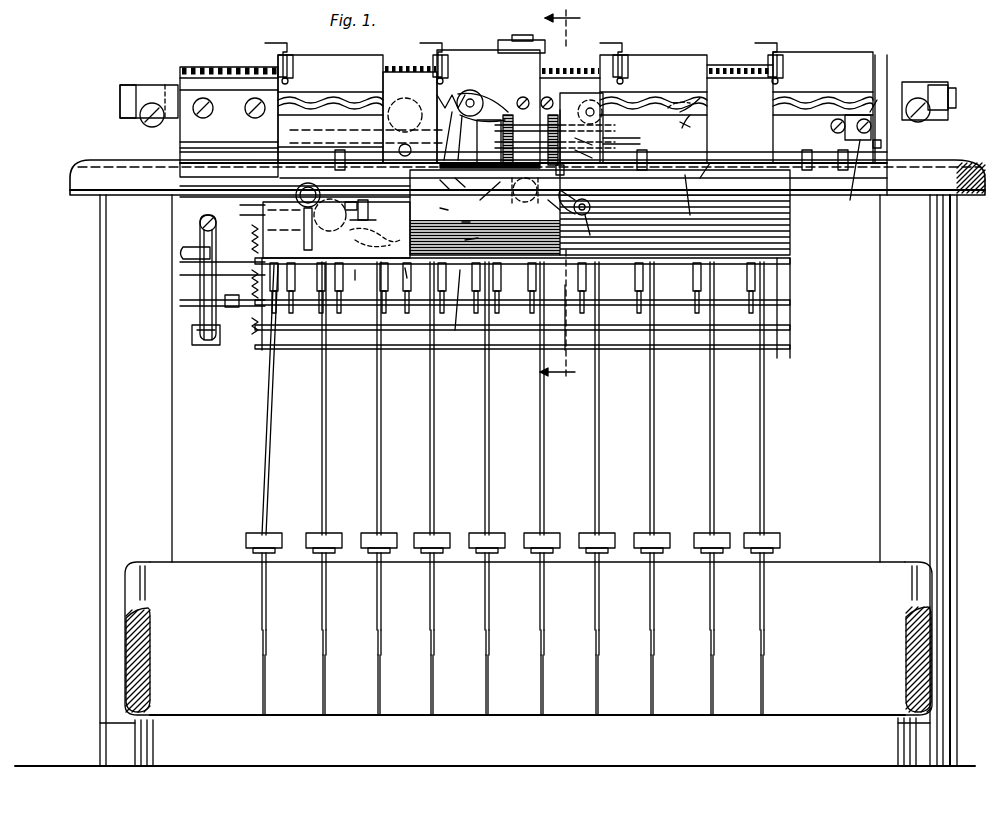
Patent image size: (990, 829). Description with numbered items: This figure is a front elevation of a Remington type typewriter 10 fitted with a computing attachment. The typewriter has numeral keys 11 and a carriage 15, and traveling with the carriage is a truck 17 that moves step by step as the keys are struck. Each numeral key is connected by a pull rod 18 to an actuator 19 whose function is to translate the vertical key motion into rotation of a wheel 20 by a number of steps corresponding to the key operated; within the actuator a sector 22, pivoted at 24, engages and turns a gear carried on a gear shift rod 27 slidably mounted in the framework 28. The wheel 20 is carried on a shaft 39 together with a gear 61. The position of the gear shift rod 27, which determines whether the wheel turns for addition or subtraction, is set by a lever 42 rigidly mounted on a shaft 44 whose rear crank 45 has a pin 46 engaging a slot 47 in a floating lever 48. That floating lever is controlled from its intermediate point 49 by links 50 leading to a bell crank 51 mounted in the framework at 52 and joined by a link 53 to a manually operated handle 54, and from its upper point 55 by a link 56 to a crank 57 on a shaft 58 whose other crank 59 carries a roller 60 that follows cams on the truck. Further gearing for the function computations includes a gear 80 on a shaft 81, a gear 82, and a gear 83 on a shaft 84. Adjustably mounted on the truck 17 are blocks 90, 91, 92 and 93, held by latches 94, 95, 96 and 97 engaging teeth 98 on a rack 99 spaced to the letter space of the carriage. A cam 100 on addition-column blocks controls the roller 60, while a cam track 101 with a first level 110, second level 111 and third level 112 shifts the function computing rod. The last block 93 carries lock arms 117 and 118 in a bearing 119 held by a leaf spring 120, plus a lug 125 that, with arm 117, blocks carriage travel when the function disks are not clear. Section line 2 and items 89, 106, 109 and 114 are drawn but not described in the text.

The section line 2 is at (566, 200).
The Remington type typewriter 10 is at (120, 253).
The numeral keys 11 is at (422, 533).
The carriage 15 is at (150, 88).
The truck 17 is at (730, 100).
The pull rod 18 is at (597, 410).
The actuator 19 is at (571, 315).
The wheel 20 is at (485, 195).
The sector 22 is at (466, 239).
The pivot 24 is at (465, 300).
The gear shift rod 27 is at (372, 211).
The framework 28 is at (730, 180).
The shaft 39 is at (535, 229).
The lever 42 is at (335, 215).
The shaft 44 is at (351, 281).
The crank 45 is at (375, 246).
The pin 46 is at (404, 277).
The slot 47 is at (457, 221).
The floating lever 48 is at (435, 212).
The intermediate point 49 is at (411, 152).
The links 50 is at (367, 133).
The bell crank 51 is at (224, 220).
The mounting point 52 is at (295, 220).
The link 53 is at (205, 236).
The manually operated handle 54 is at (212, 298).
The upper point 55 is at (410, 116).
The link 56 is at (571, 117).
The crank 57 is at (621, 133).
The shaft 58 is at (592, 209).
The crank 59 is at (547, 211).
The roller 60 is at (514, 199).
The gear 61 is at (572, 173).
The gear 80 is at (595, 158).
The shaft 81 is at (595, 145).
The gear 82 is at (469, 186).
The gear 83 is at (489, 142).
The shaft 84 is at (510, 112).
The cap 89 is at (548, 95).
The block 90 is at (330, 109).
The block 91 is at (470, 90).
The block 92 is at (686, 109).
The last block 93 is at (823, 107).
The latch 94 is at (279, 49).
The latch 95 is at (442, 50).
The latch 96 is at (614, 51).
The latch 97 is at (777, 50).
The teeth 98 is at (200, 67).
The rack 99 is at (226, 79).
The cam 100 is at (562, 203).
The cam track 101 is at (812, 90).
The screw 106 is at (517, 100).
The link 109 is at (671, 118).
The first level 110 is at (700, 100).
The second level 111 is at (690, 115).
The third level 112 is at (690, 127).
The bracket 114 is at (838, 158).
The arm 117 is at (847, 178).
The arm 118 is at (868, 112).
The bearing 119 is at (875, 122).
The leaf spring 120 is at (963, 109).
The lug 125 is at (880, 144).